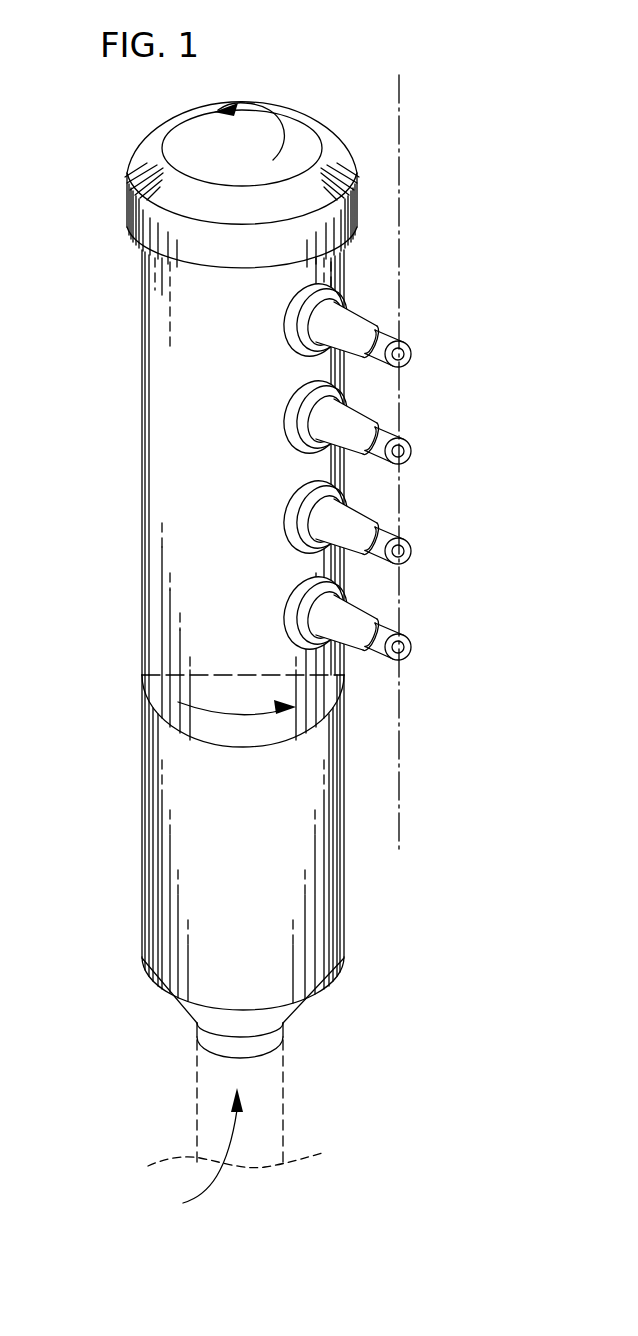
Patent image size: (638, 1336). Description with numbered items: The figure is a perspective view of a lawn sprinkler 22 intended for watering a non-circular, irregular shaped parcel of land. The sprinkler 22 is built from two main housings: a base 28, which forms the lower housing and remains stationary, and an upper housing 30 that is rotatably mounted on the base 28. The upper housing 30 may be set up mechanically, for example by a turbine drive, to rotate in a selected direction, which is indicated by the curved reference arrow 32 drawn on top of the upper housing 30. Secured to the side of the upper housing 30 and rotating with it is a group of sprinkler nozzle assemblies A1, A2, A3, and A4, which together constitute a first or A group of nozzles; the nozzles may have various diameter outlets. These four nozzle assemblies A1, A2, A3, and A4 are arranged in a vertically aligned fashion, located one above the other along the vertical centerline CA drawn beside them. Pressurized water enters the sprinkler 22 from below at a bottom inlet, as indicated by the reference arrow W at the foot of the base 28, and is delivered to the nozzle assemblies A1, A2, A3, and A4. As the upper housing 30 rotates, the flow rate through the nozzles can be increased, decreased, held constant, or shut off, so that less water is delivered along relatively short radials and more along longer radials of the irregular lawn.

The sprinkler 22 is at (82, 295).
The reference arrow 32 is at (279, 122).
The upper housing 30 is at (167, 441).
The base 28 is at (162, 837).
The nozzle assembly A1 is at (407, 330).
The nozzle assembly A2 is at (356, 425).
The nozzle assembly A3 is at (353, 524).
The nozzle assembly A4 is at (352, 624).
The vertical centerline CA is at (399, 748).
The reference arrow W is at (218, 1190).